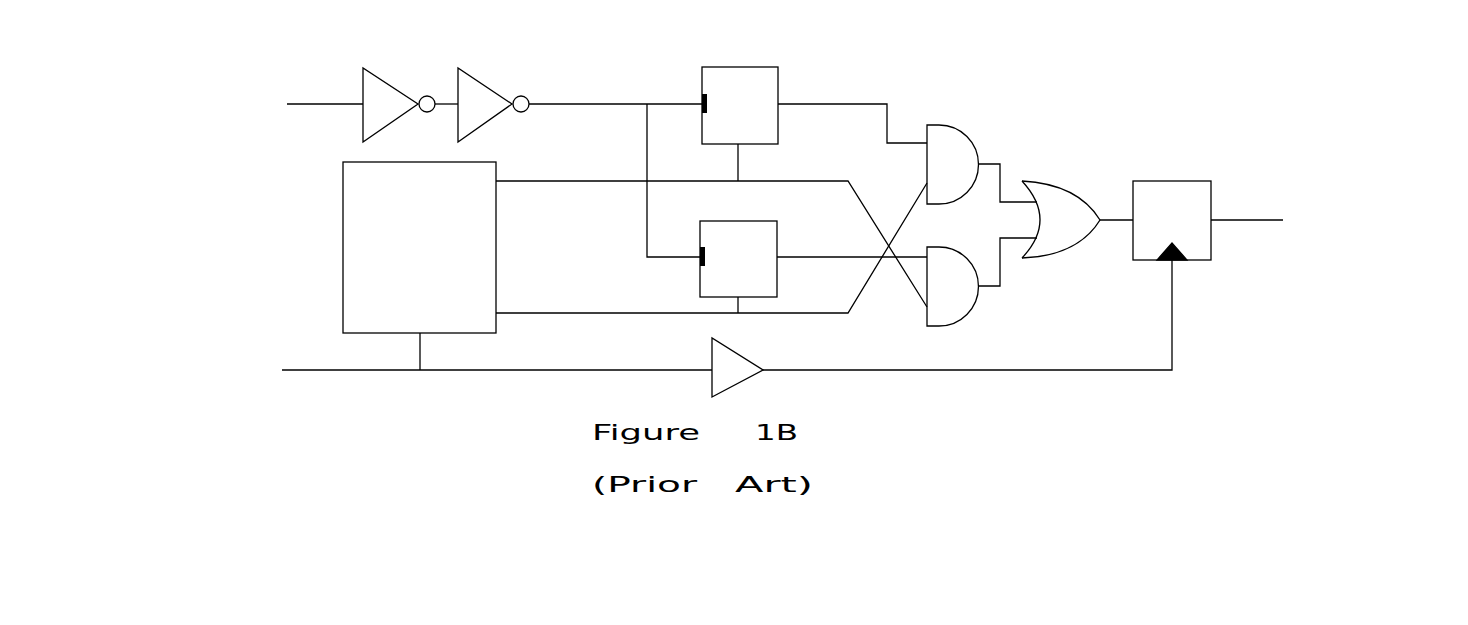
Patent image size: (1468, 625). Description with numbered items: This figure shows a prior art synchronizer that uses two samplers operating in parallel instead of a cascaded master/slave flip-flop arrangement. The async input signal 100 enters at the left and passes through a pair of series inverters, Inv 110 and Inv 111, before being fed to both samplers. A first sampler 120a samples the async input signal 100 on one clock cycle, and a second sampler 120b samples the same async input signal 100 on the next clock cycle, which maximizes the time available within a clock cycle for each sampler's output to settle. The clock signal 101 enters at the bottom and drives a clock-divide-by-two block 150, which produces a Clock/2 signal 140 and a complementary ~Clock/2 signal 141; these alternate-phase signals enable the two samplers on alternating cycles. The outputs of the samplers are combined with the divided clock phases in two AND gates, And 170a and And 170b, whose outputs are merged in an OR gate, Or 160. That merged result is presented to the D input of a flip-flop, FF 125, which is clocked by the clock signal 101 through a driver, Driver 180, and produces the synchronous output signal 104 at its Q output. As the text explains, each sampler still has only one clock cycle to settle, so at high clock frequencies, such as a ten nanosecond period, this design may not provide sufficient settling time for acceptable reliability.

The async input signal 100 is at (260, 117).
The inverter 110 is at (383, 87).
The inverter 111 is at (577, 87).
The first sampler 120a is at (800, 108).
The second sampler 120b is at (796, 251).
The clock divide by 2 circuit 150 is at (419, 266).
The clock/2 signal 140 is at (711, 231).
The inverted clock/2 signal 141 is at (711, 265).
The clock signal 101 is at (433, 380).
The driver 180 is at (942, 328).
The AND gate 170a is at (987, 147).
The AND gate 170b is at (983, 298).
The OR gate 160 is at (1077, 203).
The flip-flop 125 is at (1183, 209).
The synchronous output signal 104 is at (1328, 231).